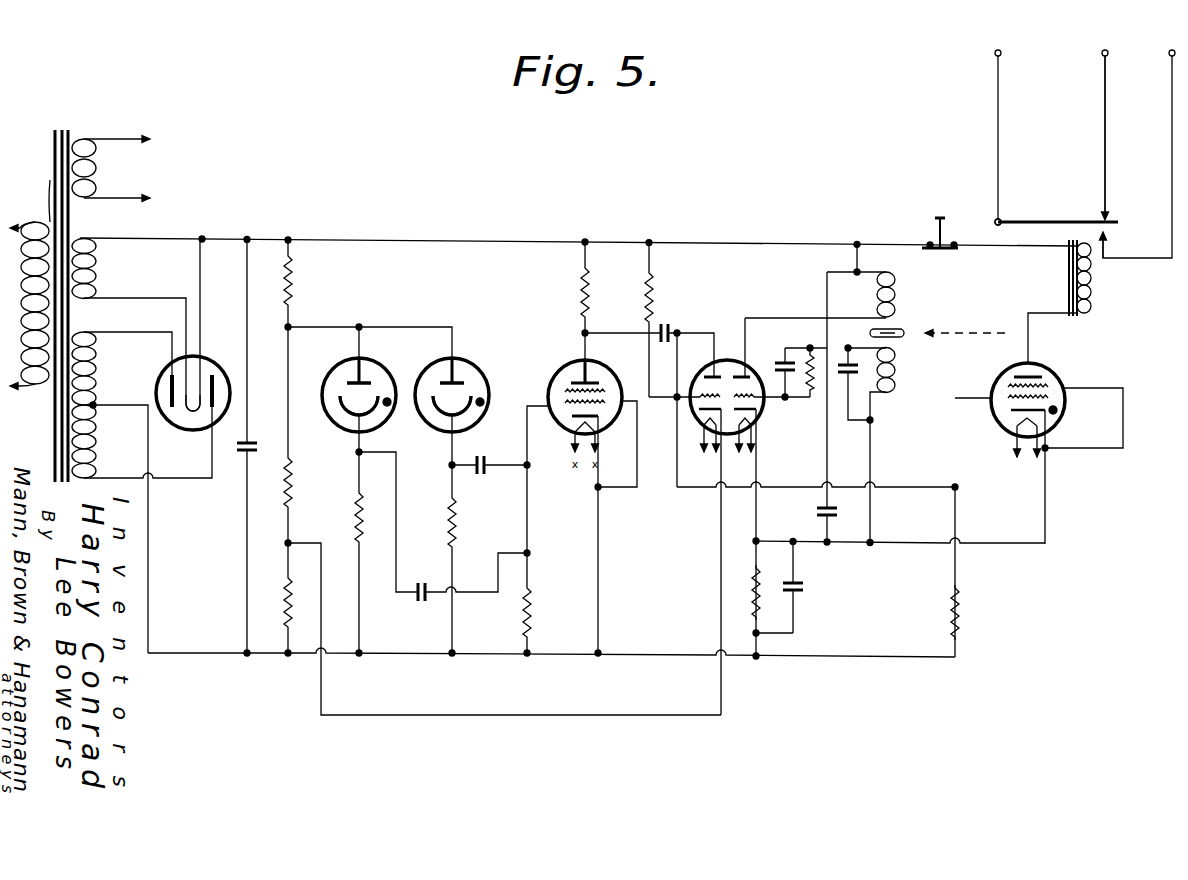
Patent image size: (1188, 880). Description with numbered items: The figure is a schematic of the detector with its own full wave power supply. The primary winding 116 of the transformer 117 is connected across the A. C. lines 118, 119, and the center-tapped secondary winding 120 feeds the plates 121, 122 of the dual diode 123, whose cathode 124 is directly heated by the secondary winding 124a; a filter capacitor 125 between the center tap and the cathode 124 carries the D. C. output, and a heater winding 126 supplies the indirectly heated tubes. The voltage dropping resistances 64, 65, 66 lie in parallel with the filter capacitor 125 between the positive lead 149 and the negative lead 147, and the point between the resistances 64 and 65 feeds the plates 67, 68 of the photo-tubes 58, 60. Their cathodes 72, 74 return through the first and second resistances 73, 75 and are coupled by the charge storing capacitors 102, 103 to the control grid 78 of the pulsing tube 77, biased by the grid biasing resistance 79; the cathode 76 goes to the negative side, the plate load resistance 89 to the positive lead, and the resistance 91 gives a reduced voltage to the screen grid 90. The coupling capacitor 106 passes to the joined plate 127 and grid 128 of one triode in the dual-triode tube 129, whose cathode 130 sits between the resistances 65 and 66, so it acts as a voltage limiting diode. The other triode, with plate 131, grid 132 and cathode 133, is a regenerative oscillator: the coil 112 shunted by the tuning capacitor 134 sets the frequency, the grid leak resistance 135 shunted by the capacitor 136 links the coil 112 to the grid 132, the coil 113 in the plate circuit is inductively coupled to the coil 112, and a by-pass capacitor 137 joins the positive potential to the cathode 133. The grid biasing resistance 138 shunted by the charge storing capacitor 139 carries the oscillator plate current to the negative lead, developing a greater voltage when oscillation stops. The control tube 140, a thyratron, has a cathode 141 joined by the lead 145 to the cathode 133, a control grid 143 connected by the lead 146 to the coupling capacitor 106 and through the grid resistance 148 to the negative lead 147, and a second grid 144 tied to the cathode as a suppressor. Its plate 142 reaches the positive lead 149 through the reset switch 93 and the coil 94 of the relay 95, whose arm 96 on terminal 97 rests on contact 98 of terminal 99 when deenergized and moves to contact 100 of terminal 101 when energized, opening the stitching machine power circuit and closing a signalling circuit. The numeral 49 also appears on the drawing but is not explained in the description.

The indicator pointer 49 is at (906, 325).
The first photo-tube 58 is at (390, 370).
The second photo-tube 60 is at (482, 370).
The voltage dropping resistance 64 is at (294, 290).
The voltage dropping resistance 65 is at (294, 476).
The voltage dropping resistance 66 is at (292, 606).
The plate 67 is at (344, 382).
The plate 68 is at (458, 375).
The cathode 72 is at (350, 412).
The first resistance 73 is at (355, 520).
The cathode 74 is at (442, 418).
The second resistance 75 is at (457, 528).
The cathode 76 is at (560, 430).
The pulsing tube 77 is at (558, 366).
The control grid 78 is at (549, 404).
The grid biasing resistance 79 is at (532, 606).
The plate load resistance 89 is at (580, 298).
The screen grid 90 is at (614, 430).
The resistance 91 is at (654, 292).
The reset switch 93 is at (932, 232).
The coil 94 is at (1092, 280).
The relay 95 is at (1066, 210).
The relay arm 96 is at (1004, 222).
The terminal 97 is at (1002, 56).
The contact 98 is at (1108, 216).
The terminal 99 is at (1108, 52).
The contact 100 is at (1108, 236).
The terminal 101 is at (1170, 56).
The charge storing capacitor 102 is at (428, 602).
The charge storing capacitor 103 is at (490, 474).
The coupling capacitor 106 is at (672, 322).
The coil 112 is at (896, 374).
The coil 113 is at (896, 292).
The primary winding 116 is at (50, 222).
The transformer 117 is at (62, 128).
The A. C. line 118 is at (16, 225).
The A. C. line 119 is at (16, 390).
The center-tapped secondary winding 120 is at (98, 364).
The plate 121 is at (170, 388).
The plate 122 is at (214, 375).
The dual diode 123 is at (196, 431).
The cathode 124 is at (200, 370).
The secondary winding 124a is at (97, 268).
The filter capacitor 125 is at (253, 440).
The secondary heater winding 126 is at (97, 168).
The plate 127 is at (712, 372).
The grid 128 is at (692, 402).
The dual-triode tube 129 is at (731, 362).
The cathode 130 is at (677, 484).
The plate 131 is at (746, 372).
The grid 132 is at (762, 410).
The cathode 133 is at (760, 430).
The tuning capacitor 134 is at (848, 412).
The grid leak resistance 135 is at (787, 356).
The capacitor 136 is at (812, 356).
The by-pass capacitor 137 is at (814, 508).
The grid biasing resistance 138 is at (750, 594).
The charge storing capacitor 139 is at (806, 588).
The control tube 140 is at (1060, 386).
The cathode 141 is at (1012, 430).
The plate 142 is at (1034, 374).
The control grid 143 is at (1008, 398).
The second grid 144 is at (1004, 388).
The lead 145 is at (1010, 547).
The lead 146 is at (912, 487).
The negative D. C. voltage lead 147 is at (575, 655).
The grid resistance 148 is at (960, 614).
The positive D. C. voltage lead 149 is at (778, 243).